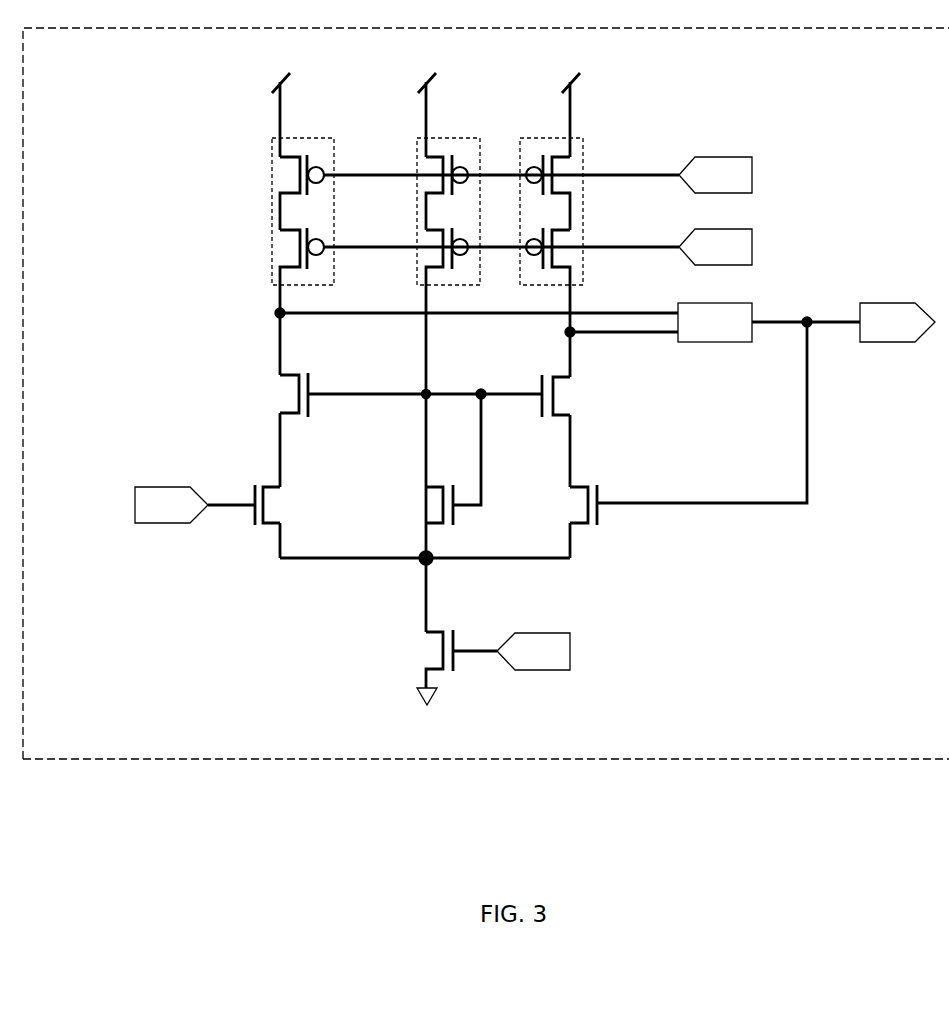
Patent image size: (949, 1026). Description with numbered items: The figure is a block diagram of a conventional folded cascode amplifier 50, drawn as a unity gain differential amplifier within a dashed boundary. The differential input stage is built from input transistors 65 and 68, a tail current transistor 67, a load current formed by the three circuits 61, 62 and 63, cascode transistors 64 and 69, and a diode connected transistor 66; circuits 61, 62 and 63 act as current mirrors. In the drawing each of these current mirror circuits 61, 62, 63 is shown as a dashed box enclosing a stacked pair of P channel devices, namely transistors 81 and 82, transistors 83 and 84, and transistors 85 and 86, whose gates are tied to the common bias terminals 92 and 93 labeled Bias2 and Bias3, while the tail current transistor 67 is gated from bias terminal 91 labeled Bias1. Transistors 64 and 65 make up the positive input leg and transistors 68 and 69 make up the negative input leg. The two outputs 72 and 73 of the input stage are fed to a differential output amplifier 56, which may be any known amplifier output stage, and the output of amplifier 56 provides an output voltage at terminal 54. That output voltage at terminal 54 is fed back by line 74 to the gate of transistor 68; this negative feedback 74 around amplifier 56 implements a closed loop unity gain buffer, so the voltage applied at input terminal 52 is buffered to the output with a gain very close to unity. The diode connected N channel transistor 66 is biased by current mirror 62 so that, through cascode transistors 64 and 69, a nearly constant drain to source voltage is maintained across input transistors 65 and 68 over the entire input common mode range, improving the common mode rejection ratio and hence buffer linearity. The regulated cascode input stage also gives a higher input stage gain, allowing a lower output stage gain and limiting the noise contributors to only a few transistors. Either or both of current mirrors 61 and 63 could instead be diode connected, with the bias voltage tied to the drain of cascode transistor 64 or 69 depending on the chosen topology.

The amplifier circuit 50 is at (72, 56).
The input terminal 52 is at (149, 516).
The output terminal 54 is at (867, 334).
The differential output amplifier 56 is at (702, 334).
The load current circuit 61 is at (272, 173).
The load current circuit 62 is at (417, 173).
The load current circuit 63 is at (520, 173).
The cascode transistor 64 is at (293, 395).
The input transistor 65 is at (283, 505).
The diode connected transistor 66 is at (430, 505).
The tail current transistor 67 is at (436, 651).
The input transistor 68 is at (578, 505).
The cascode transistor 69 is at (558, 395).
The output of the input stage 72 is at (629, 315).
The output of the input stage 73 is at (668, 333).
The feedback line 74 is at (805, 473).
The PMOS transistor 81 is at (297, 165).
The PMOS transistor 82 is at (292, 237).
The PMOS transistor 83 is at (440, 165).
The PMOS transistor 84 is at (437, 237).
The PMOS transistor 85 is at (555, 165).
The PMOS transistor 86 is at (560, 237).
The bias voltage Bias1 91 is at (529, 663).
The bias voltage Bias2 92 is at (710, 186).
The bias voltage Bias3 93 is at (710, 258).